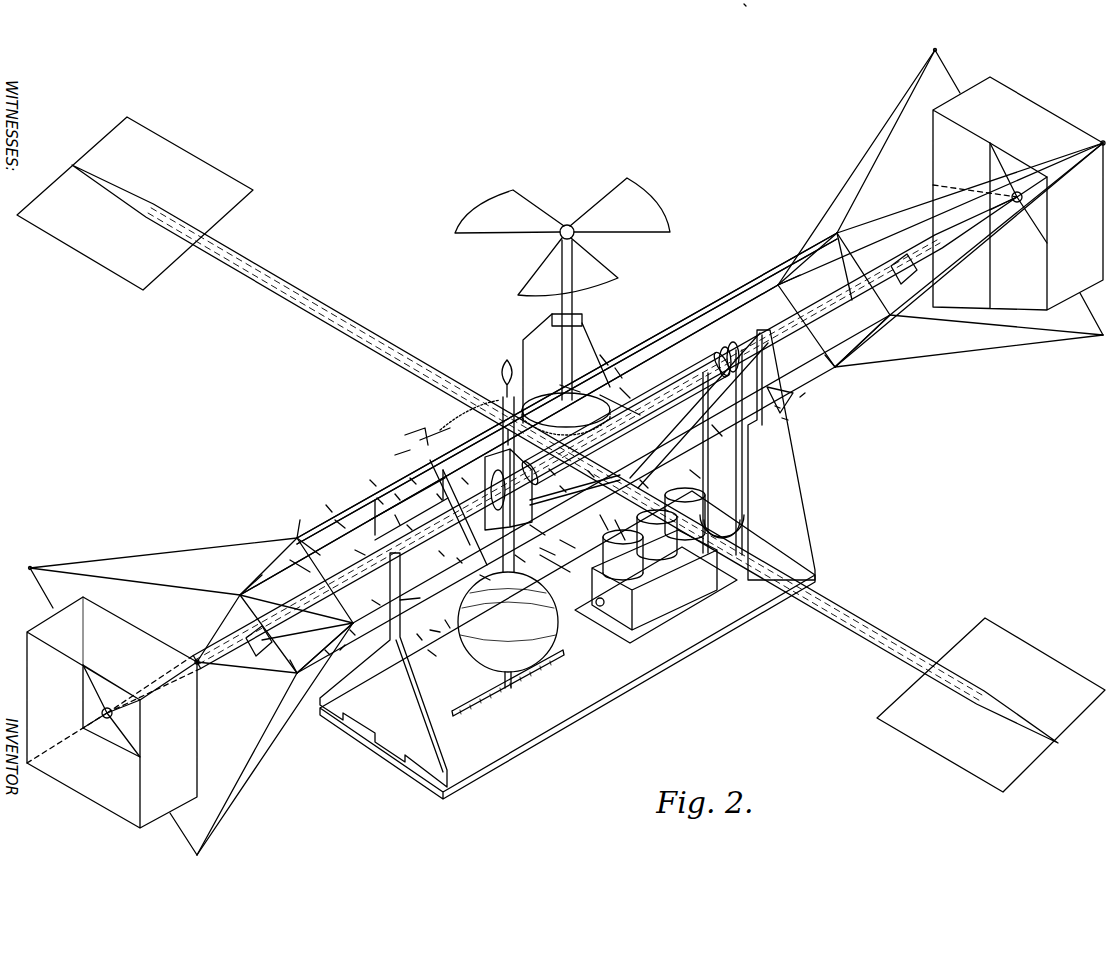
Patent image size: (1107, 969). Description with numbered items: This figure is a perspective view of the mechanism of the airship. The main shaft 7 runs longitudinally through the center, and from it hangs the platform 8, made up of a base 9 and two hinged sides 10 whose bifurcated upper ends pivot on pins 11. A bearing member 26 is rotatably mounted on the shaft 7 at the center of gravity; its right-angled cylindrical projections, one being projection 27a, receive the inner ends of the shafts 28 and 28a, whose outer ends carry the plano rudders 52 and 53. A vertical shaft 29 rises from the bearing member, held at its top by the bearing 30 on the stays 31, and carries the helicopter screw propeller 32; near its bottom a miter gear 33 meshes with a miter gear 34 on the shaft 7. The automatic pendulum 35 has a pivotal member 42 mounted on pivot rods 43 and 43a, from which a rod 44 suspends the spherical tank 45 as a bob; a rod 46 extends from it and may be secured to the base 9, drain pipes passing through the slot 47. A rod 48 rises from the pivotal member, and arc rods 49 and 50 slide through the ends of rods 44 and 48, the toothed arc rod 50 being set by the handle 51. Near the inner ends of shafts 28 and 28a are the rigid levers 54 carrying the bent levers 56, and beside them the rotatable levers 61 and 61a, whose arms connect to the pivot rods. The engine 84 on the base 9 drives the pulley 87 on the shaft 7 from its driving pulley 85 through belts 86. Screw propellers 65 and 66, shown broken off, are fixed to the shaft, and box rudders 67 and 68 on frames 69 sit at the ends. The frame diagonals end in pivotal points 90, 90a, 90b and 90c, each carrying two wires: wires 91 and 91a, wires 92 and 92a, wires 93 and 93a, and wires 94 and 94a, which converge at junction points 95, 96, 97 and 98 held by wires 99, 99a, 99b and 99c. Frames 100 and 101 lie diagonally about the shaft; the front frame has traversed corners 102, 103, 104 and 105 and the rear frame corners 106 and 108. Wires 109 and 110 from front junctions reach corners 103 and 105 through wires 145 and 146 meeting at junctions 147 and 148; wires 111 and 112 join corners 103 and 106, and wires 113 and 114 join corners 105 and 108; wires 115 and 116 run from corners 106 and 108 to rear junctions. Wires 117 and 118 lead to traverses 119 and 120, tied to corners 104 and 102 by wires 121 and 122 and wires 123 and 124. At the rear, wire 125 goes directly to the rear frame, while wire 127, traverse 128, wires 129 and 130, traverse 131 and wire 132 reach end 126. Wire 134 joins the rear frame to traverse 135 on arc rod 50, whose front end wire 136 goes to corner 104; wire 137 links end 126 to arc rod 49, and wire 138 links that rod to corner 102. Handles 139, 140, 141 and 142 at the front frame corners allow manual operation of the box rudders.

The main shaft 7 is at (690, 378).
The platform 8 is at (697, 662).
The base 9 is at (697, 632).
The hinged sides 10 is at (770, 505).
The pins 11 is at (440, 548).
The bearing member 26 is at (547, 465).
The cylindrical projection 27a is at (586, 467).
The shaft 28 is at (262, 275).
The shaft 28a is at (832, 600).
The vertical shaft 29 is at (575, 300).
The bearing 30 is at (582, 320).
The stays 31 is at (530, 330).
The helicopter screw propeller 32 is at (525, 215).
The miter gear 33 is at (566, 414).
The miter gear 34 is at (618, 398).
The automatic pendulum 35 is at (440, 637).
The pivotal member 42 is at (498, 489).
The pivot rod 43 is at (430, 430).
The pivot rod 43a is at (577, 548).
The rod 44 is at (545, 562).
The tank 45 is at (508, 622).
The rod 46 is at (500, 680).
The slot 47 is at (470, 705).
The rod 48 is at (500, 443).
The arc rod 49 is at (530, 564).
The arc rod 50 is at (475, 420).
The handle 51 is at (500, 365).
The plano rudder 52 is at (215, 168).
The plano rudder 53 is at (1030, 648).
The lever 54 is at (598, 516).
The double-ended bent lever 56 is at (625, 521).
The lever 61 is at (452, 437).
The lever 61a is at (575, 490).
The screw propeller 65 is at (255, 655).
The screw propeller 66 is at (920, 285).
The box rudder 67 is at (112, 712).
The box rudder 68 is at (1018, 193).
The frame 69 is at (90, 762).
The engine 84 is at (654, 559).
The driving pulley 85 is at (714, 503).
The belts 86 is at (742, 470).
The pulley 87 is at (712, 358).
The pivotal point 90 is at (30, 765).
The pivotal point 90a is at (32, 568).
The pivotal point 90b is at (200, 665).
The pivotal point 90c is at (200, 855).
The wire 91 is at (205, 635).
The wire 91a is at (240, 700).
The wire 92 is at (178, 590).
The wire 92a is at (160, 552).
The wire 93 is at (275, 590).
The wire 93a is at (316, 632).
The wire 94 is at (270, 745).
The wire 94a is at (265, 730).
The junction point 95 is at (228, 597).
The junction point 96 is at (295, 532).
The junction point 97 is at (350, 625).
The junction point 98 is at (295, 668).
The wire 99 is at (308, 651).
The wire 99a is at (320, 650).
The wire 99b is at (320, 565).
The wire 99c is at (250, 580).
The frame 100 is at (410, 502).
The frame 101 is at (670, 415).
The corner 102 is at (660, 340).
The corner 103 is at (397, 512).
The corner 104 is at (408, 473).
The corner 105 is at (458, 512).
The corner 106 is at (625, 386).
The corner 108 is at (703, 415).
The wire 109 is at (300, 572).
The wire 110 is at (365, 604).
The wire 111 is at (393, 489).
The wire 112 is at (405, 520).
The wire 113 is at (557, 482).
The wire 114 is at (528, 529).
The wire 115 is at (695, 337).
The wire 116 is at (855, 333).
The wire 117 is at (321, 498).
The wire 118 is at (337, 661).
The traverse 119 is at (343, 516).
The traverse 120 is at (354, 642).
The wire 121 is at (367, 475).
The wire 122 is at (435, 489).
The wire 123 is at (363, 627).
The wire 124 is at (415, 630).
The wire 125 is at (778, 264).
The end 126 is at (645, 480).
The wire 127 is at (814, 388).
The traverse 128 is at (786, 392).
The wire 129 is at (772, 406).
The wire 130 is at (789, 419).
The traverse 131 is at (595, 352).
The wire 132 is at (685, 466).
The wire 134 is at (613, 364).
The traverse 135 is at (550, 385).
The wire 136 is at (460, 474).
The wire 137 is at (554, 544).
The wire 138 is at (443, 619).
The handle 139 is at (422, 646).
The handle 140 is at (375, 494).
The handle 141 is at (400, 449).
The handle 142 is at (477, 571).
The wire 145 is at (353, 547).
The wire 146 is at (455, 553).
The junction point 147 is at (300, 520).
The junction point 148 is at (437, 546).